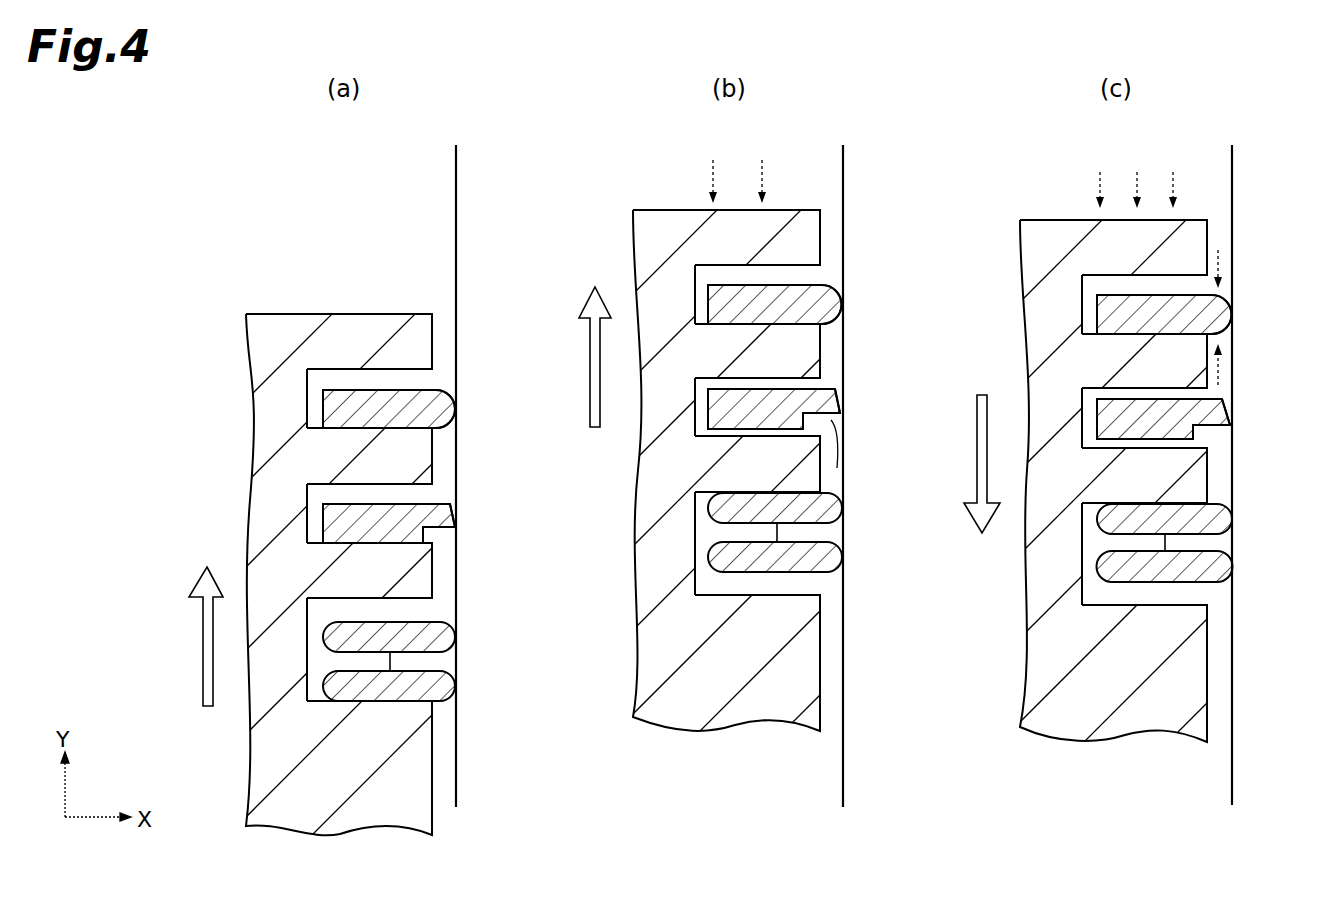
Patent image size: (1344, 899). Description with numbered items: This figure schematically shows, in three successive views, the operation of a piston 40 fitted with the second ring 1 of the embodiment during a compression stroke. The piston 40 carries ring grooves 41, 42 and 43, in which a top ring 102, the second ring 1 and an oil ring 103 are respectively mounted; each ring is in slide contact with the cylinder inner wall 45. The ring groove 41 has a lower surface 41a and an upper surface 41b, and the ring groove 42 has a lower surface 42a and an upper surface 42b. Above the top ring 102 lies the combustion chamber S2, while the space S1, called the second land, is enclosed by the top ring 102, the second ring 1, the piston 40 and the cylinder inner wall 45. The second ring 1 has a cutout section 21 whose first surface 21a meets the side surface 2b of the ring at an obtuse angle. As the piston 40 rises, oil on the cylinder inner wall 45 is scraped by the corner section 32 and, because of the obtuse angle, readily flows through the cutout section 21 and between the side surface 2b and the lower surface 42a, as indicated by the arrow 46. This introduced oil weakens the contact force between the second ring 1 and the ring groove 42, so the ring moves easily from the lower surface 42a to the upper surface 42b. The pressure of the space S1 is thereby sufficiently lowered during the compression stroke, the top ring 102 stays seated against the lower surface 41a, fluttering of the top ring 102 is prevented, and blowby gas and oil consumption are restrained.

The second ring 1 is at (330, 515).
The side surface 2b is at (340, 548).
The cutout section 21 is at (436, 530).
The first surface 21a is at (427, 540).
The corner section 32 is at (435, 538).
The piston 40 is at (277, 323).
The ring groove 41 is at (313, 376).
The lower surface 41a is at (362, 395).
The first groove 41b is at (385, 383).
The ring groove 42 is at (313, 495).
The lower surface 42a is at (430, 606).
The upper surface 42b is at (380, 497).
The ring groove 43 is at (313, 628).
The cylinder inner wall 45 is at (456, 240).
The arrow 46 is at (840, 465).
The top ring 102 is at (330, 412).
The oil ring 103 is at (330, 688).
The space (second land) S1 is at (443, 452).
The combustion chamber S2 is at (445, 298).